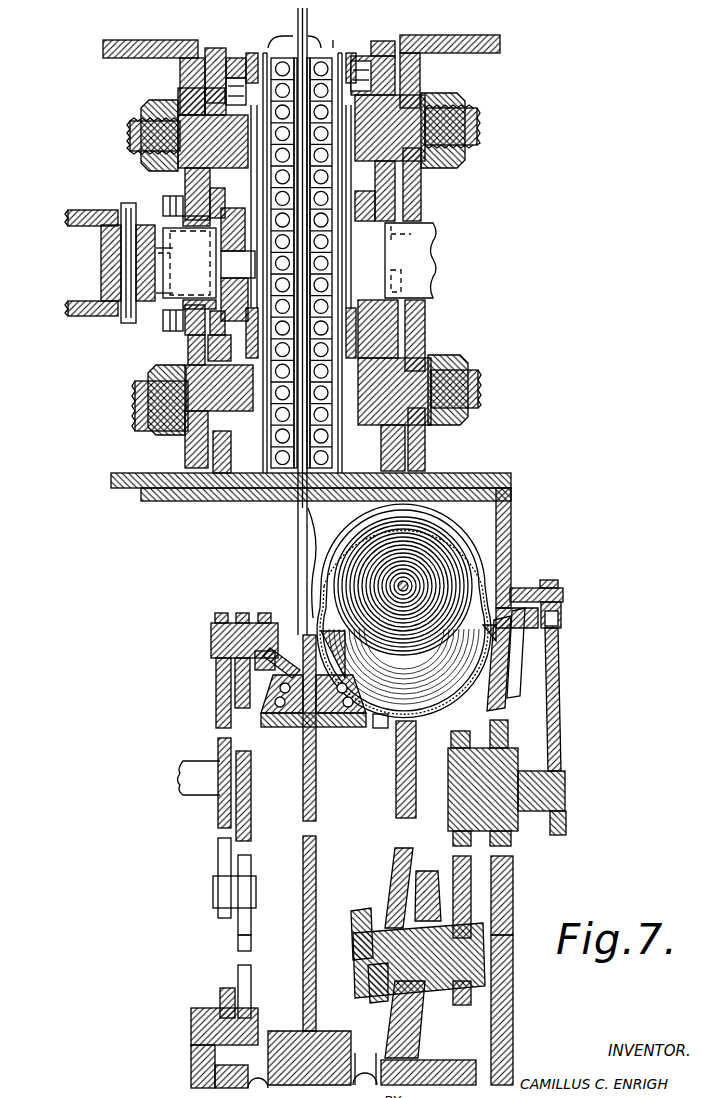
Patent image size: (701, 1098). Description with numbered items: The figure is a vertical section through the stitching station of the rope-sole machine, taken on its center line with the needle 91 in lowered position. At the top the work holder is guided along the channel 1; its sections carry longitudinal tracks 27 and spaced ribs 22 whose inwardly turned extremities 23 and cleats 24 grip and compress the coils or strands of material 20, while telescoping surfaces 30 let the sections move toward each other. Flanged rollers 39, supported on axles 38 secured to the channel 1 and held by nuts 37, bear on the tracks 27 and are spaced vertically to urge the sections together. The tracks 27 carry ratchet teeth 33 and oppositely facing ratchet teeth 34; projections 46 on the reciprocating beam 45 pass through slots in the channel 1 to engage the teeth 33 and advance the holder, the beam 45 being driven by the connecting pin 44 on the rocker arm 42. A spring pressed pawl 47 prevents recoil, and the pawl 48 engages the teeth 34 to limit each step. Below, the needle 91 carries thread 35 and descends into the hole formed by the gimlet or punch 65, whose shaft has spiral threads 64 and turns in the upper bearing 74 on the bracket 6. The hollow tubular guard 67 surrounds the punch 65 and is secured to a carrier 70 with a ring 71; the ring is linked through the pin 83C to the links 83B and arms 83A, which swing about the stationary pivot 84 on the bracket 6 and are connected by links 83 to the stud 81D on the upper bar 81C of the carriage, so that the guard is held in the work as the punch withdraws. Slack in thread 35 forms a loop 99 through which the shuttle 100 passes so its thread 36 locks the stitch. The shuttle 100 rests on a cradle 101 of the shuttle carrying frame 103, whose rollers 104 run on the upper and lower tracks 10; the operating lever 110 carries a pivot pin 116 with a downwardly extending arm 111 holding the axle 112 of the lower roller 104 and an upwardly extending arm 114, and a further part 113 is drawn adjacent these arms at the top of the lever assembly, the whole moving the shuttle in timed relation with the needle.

The channel 1 is at (490, 39).
The bracket 6 is at (440, 1052).
The tracks 10 is at (512, 578).
The coils or strands of material 20 is at (360, 299).
The spaced ribs 22 is at (268, 472).
The inwardly turned extremities 23 is at (276, 472).
The cleats or rearwardly turned projections 24 is at (284, 45).
The tracks 27 is at (388, 199).
The telescoping surfaces 30 is at (420, 241).
The ratchet teeth 33 is at (209, 263).
The ratchet teeth 34 is at (424, 214).
The thread 35 is at (292, 8).
The thread 36 is at (305, 551).
The nuts 37 is at (140, 95).
The axles 38 is at (122, 123).
The flanged rollers 39 is at (215, 62).
The rocker arm 42 is at (68, 215).
The connecting pin 44 is at (115, 202).
The reciprocating beam 45 is at (100, 263).
The projections 46 is at (148, 215).
The spring pressed pawl 47 is at (172, 272).
The pawl 48 is at (410, 266).
The spiral slots or threads 64 is at (322, 1023).
The gimlet or punch 65 is at (309, 859).
The hollow tubular guard 67 is at (313, 25).
The carrier 70 is at (313, 708).
The ring 71 is at (240, 684).
The upper bearing 74 is at (360, 1060).
The upper bar 81C is at (185, 759).
The stud 81D is at (238, 764).
The links 83 is at (212, 807).
The arms 83A is at (243, 924).
The links 83B is at (210, 697).
The pin 83C is at (270, 600).
The stationary pivot 84 is at (245, 1017).
The needle 91 is at (300, 8).
The loop 99 is at (430, 514).
The shuttle 100 is at (505, 556).
The cradle 101 is at (375, 712).
The shuttle carrying frame 103 is at (390, 766).
The rollers 104 is at (512, 661).
The operating lever 110 is at (505, 961).
The downwardly extending arm 111 is at (463, 867).
The axle 112 is at (505, 907).
The cap 113 is at (553, 604).
The upwardly extending arm 114 is at (551, 656).
The pivot pin 116 is at (557, 771).